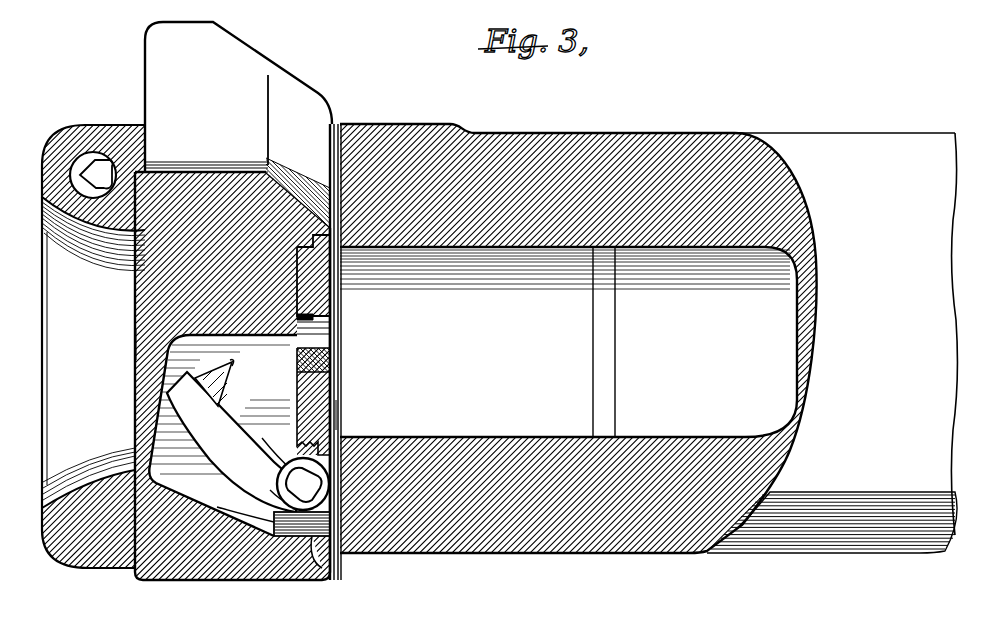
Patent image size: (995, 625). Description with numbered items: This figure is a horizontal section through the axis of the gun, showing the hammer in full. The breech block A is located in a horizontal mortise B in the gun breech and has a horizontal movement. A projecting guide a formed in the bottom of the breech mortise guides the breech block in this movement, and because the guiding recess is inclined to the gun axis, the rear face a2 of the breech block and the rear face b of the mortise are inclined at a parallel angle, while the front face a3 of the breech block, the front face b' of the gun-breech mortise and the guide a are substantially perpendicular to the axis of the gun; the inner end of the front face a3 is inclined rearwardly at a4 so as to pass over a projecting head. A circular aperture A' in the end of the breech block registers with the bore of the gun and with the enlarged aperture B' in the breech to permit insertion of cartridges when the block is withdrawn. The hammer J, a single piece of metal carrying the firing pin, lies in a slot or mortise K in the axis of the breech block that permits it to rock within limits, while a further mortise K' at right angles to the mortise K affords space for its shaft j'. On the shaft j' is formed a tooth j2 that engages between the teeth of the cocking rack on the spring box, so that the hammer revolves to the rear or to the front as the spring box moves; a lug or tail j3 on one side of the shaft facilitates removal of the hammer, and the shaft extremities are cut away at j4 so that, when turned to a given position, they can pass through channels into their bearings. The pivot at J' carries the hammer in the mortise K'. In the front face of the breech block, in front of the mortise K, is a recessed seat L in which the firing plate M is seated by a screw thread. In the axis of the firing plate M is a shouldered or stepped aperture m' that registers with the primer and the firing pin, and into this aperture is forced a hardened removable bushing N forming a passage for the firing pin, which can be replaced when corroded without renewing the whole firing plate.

The breech block A is at (93, 346).
The circular aperture A' is at (238, 97).
The horizontal mortise B is at (222, 394).
The enlarged aperture B' is at (64, 358).
The projecting guide a is at (340, 568).
The rear face of the breech block a2 is at (134, 350).
The front face of the breech block a3 is at (326, 145).
The rearwardly inclined portion a4 is at (298, 177).
The rear face of the mortise b is at (244, 352).
The front face of the gun-breech mortise b' is at (357, 411).
The hammer J is at (233, 442).
The pivot bolt J' is at (333, 465).
The shaft of the hammer j' is at (214, 383).
The tooth j2 is at (272, 492).
The lug or tail j3 is at (236, 504).
The cut-away portions of the hammer shaft extremities j4 is at (283, 448).
The slot or mortise K is at (297, 401).
The mortise for the hammer shaft K' is at (298, 564).
The recessed seat L is at (300, 288).
The firing plate M is at (316, 304).
The shouldered or stepped aperture m' is at (344, 334).
The bushing N is at (300, 362).